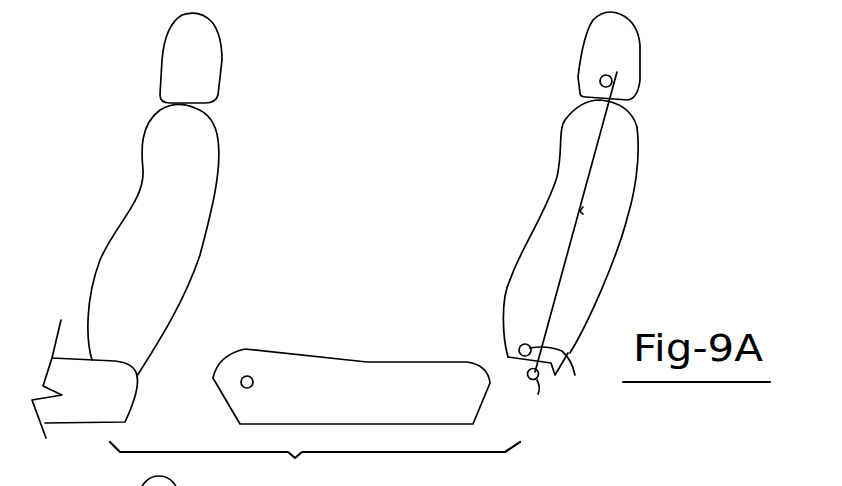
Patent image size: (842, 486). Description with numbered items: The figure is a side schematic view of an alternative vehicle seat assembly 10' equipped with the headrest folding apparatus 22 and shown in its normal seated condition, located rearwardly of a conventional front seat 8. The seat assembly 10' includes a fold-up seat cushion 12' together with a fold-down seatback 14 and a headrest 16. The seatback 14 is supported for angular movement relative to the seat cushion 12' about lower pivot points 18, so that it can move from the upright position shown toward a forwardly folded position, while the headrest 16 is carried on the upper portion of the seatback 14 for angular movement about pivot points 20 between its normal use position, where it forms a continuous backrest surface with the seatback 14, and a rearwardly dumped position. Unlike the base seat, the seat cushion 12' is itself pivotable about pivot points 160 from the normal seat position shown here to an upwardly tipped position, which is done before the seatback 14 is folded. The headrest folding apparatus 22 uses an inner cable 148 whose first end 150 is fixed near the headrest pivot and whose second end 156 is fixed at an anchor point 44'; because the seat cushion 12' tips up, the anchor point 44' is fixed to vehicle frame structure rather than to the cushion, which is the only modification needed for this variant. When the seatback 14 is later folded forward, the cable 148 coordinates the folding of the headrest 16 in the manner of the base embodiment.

The front seat 8 is at (240, 145).
The seat assembly 10' is at (637, 229).
The fold-up seat cushion 12' is at (351, 368).
The fold-down seatback 14 is at (607, 240).
The headrest 16 is at (618, 48).
The pivot points 18 is at (519, 352).
The pivot points 20 is at (598, 88).
The headrest folding apparatus 22 is at (630, 170).
The anchor point 44' is at (548, 414).
The inner cable 148 is at (583, 207).
The first end 150 is at (612, 78).
The second end 156 is at (575, 375).
The pivot points 160 is at (248, 376).